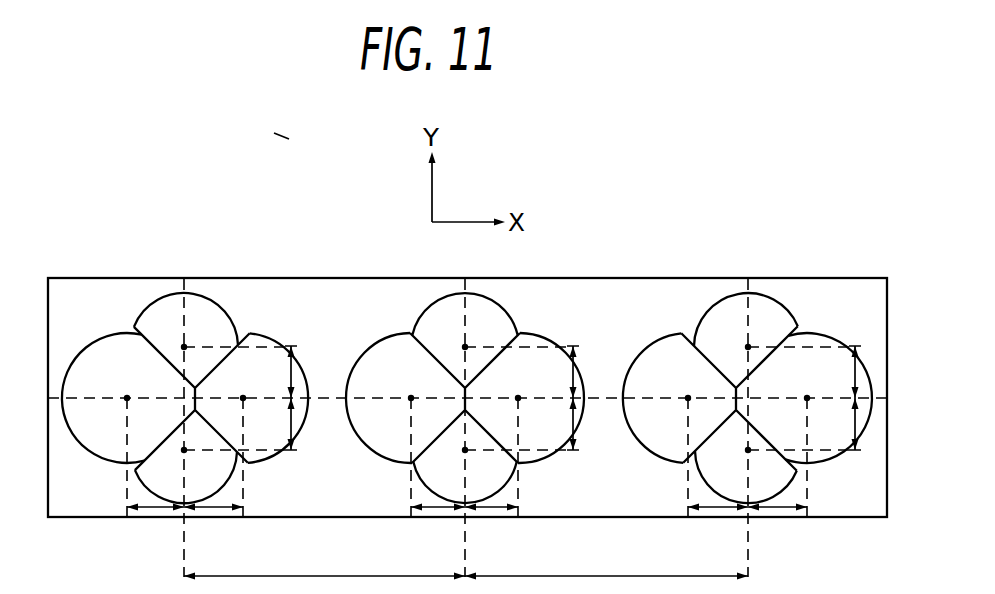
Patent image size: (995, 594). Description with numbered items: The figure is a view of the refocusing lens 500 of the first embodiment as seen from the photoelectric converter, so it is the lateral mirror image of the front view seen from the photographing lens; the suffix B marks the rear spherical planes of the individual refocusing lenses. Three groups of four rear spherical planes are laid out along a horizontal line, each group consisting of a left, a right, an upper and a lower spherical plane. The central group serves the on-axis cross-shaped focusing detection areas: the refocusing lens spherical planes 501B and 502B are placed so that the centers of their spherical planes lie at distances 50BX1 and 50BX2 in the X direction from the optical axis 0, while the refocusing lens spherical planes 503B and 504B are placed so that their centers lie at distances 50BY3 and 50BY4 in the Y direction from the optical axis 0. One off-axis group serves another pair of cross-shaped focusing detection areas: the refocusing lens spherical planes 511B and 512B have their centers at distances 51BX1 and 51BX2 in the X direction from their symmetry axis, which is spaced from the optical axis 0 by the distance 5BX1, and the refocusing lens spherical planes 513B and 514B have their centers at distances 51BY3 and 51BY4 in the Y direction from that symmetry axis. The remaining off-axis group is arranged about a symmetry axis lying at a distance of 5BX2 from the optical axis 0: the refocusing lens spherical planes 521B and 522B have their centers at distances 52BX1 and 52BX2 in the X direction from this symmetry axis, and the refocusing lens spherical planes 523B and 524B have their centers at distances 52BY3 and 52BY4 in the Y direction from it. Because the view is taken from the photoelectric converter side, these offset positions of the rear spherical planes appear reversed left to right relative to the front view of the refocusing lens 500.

The refocusing lens 500 is at (827, 525).
The optical axis 0 is at (459, 404).
The refocusing lens spherical plane 522B is at (93, 338).
The refocusing lens spherical plane 523B is at (223, 311).
The refocusing lens spherical plane 521B is at (269, 461).
The refocusing lens spherical plane 524B is at (231, 481).
The distance 52BY3 is at (291, 368).
The distance 52BY4 is at (291, 423).
The distance 52BX2 is at (158, 517).
The distance 52BX1 is at (217, 517).
The refocusing lens spherical plane 502B is at (377, 340).
The refocusing lens spherical plane 503B is at (507, 312).
The refocusing lens spherical plane 501B is at (538, 462).
The refocusing lens spherical plane 504B is at (512, 488).
The distance 50BY3 is at (573, 376).
The distance 50BY4 is at (573, 424).
The distance 50BX2 is at (440, 517).
The distance 50BX1 is at (497, 517).
The refocusing lens spherical plane 512B is at (648, 343).
The refocusing lens spherical plane 513B is at (788, 312).
The refocusing lens spherical plane 511B is at (818, 463).
The refocusing lens spherical plane 514B is at (798, 488).
The distance 51BY3 is at (855, 377).
The distance 51BY4 is at (855, 424).
The distance 51BX2 is at (718, 517).
The distance 51BX1 is at (780, 517).
The distance 5BX2 is at (324, 564).
The distance 5BX1 is at (606, 564).